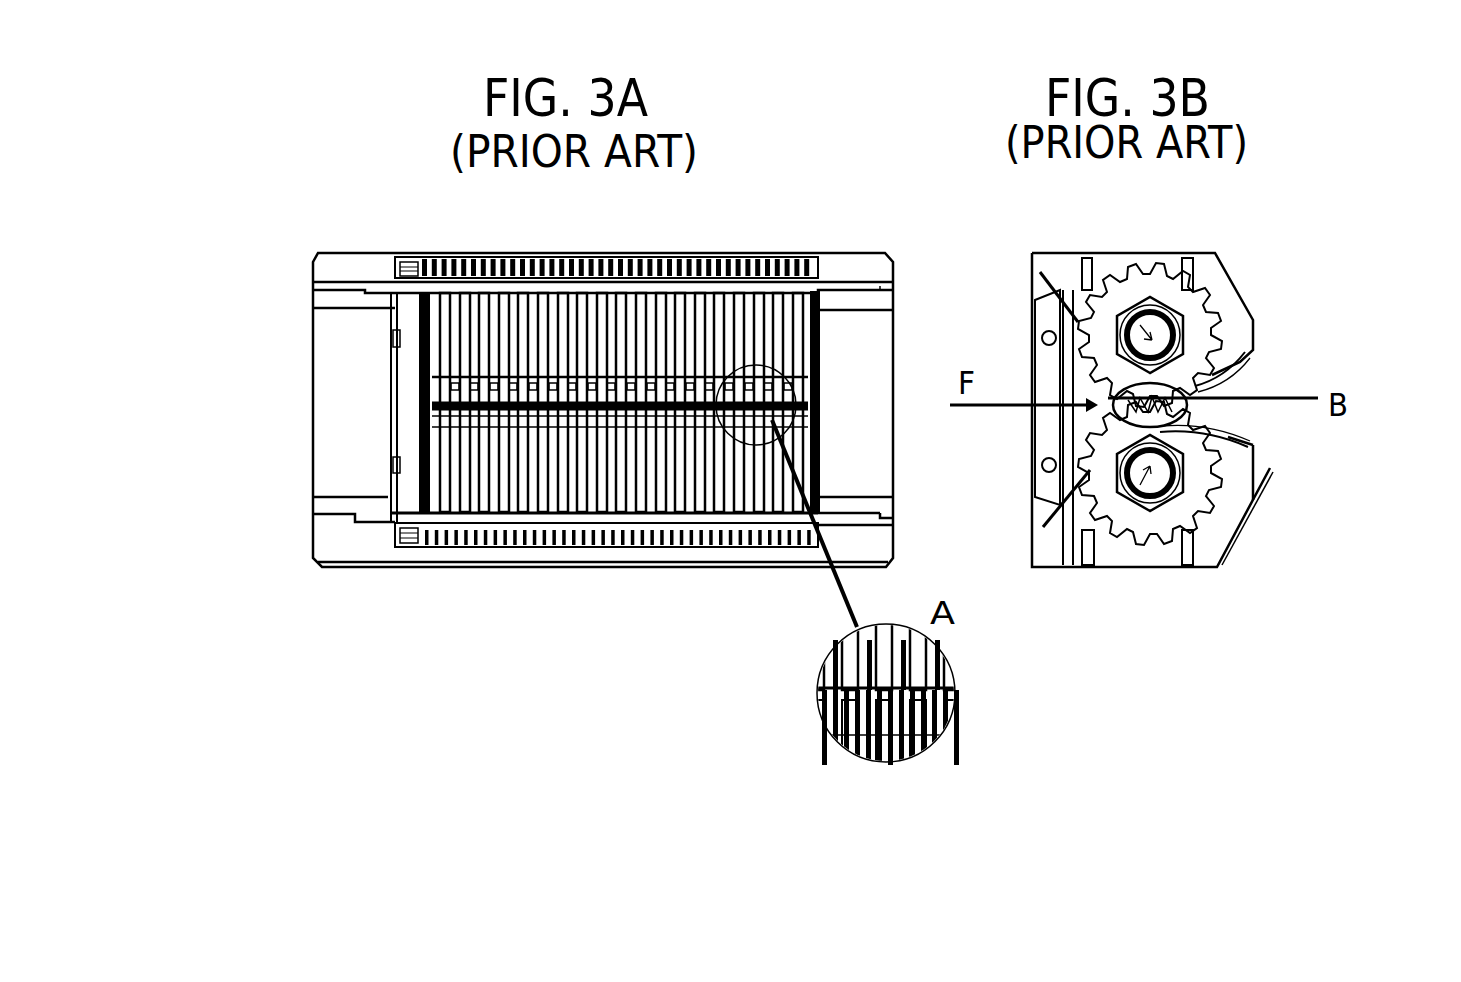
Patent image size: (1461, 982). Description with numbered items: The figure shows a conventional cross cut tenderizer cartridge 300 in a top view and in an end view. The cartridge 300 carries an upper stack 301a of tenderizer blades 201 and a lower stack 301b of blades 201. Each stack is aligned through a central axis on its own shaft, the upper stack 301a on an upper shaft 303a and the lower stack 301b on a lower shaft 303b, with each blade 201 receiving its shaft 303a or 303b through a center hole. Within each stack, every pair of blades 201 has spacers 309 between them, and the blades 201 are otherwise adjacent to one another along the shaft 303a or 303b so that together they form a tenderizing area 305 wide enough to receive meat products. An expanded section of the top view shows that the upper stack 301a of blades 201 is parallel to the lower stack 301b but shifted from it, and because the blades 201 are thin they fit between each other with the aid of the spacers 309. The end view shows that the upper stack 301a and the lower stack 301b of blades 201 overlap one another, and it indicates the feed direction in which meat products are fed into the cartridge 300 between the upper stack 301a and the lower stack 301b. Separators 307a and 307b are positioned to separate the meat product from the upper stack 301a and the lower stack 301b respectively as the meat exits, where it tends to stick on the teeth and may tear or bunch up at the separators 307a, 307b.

In FIG. 3A, the tenderizer cartridge 300 is at (290, 282).
In FIG. 3A, the stack of blades (upper stack) 301a is at (300, 305).
In FIG. 3A, the stack of blades (lower stack) 301b is at (300, 412).
In FIG. 3A, the tenderizing area 305 is at (810, 576).
In FIG. 3A, the tenderizer blade 201 is at (890, 668).
In FIG. 3B, the tenderizer blade 201 is at (1217, 447).
In FIG. 3A, the spacers 309 is at (880, 747).
In FIG. 3B, the upper shaft 303a is at (1145, 332).
In FIG. 3B, the lower shaft 303b is at (1143, 470).
In FIG. 3B, the separator (upper) 307a is at (1256, 371).
In FIG. 3B, the separator (lower) 307b is at (1208, 433).